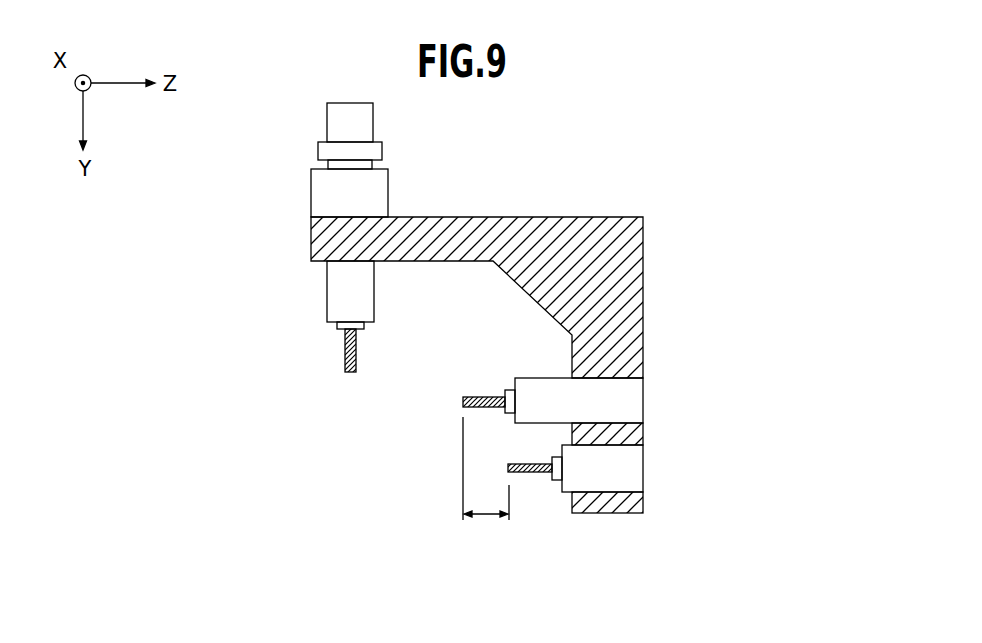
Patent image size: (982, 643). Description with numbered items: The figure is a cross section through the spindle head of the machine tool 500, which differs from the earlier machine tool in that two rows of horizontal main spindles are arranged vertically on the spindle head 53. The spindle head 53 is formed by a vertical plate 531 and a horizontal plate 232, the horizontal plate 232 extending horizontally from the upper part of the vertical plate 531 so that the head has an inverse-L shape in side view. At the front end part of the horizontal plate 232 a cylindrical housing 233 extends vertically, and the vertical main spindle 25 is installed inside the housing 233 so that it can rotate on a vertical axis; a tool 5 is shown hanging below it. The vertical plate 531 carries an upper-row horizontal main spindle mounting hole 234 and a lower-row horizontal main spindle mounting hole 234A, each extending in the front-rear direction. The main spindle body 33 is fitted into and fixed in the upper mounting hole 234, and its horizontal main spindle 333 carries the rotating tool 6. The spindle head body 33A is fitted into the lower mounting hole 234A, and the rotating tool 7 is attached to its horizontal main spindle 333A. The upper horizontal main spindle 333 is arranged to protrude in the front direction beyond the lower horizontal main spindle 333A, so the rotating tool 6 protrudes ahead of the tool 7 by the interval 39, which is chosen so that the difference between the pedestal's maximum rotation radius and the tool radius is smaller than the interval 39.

The machine tool 500 is at (657, 145).
The spindle head 53 is at (652, 252).
The vertical plate 531 is at (643, 308).
The horizontal plate 232 is at (512, 217).
The housing 233 is at (311, 192).
The vertical main spindle 25 is at (327, 305).
The tool 5 is at (345, 362).
The main spindle body 33 is at (545, 375).
The horizontal main spindle mounting hole 234 is at (620, 381).
The horizontal main spindle 333 is at (508, 390).
The rotating tool 6 is at (463, 398).
The spindle head body 33A is at (588, 472).
The horizontal main spindle mounting hole 234A is at (620, 483).
The horizontal main spindle 333A is at (553, 481).
The tool 7 is at (518, 463).
The interval 39 is at (487, 520).